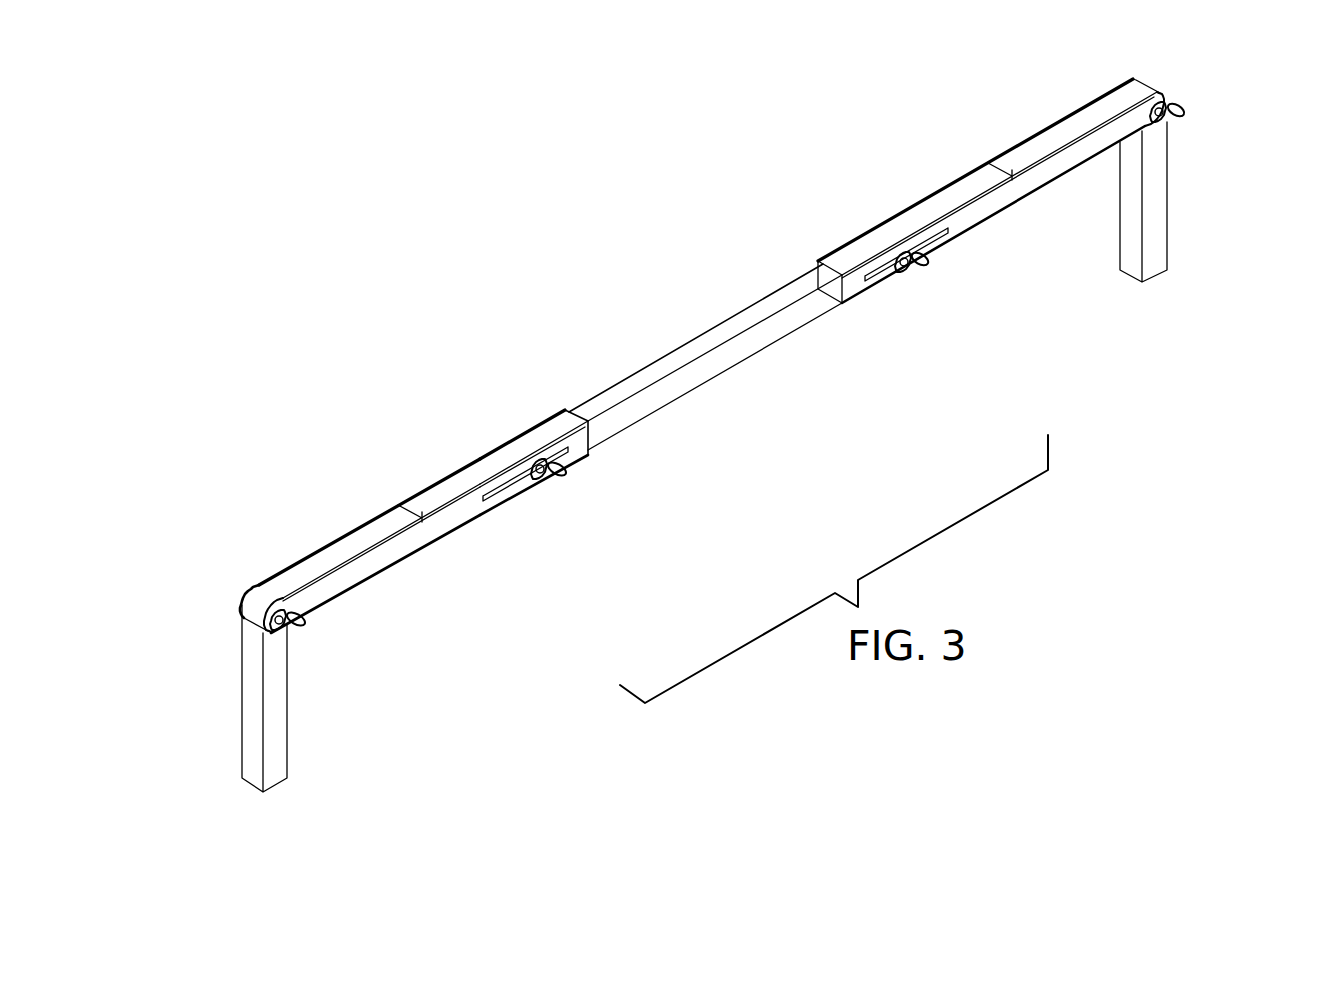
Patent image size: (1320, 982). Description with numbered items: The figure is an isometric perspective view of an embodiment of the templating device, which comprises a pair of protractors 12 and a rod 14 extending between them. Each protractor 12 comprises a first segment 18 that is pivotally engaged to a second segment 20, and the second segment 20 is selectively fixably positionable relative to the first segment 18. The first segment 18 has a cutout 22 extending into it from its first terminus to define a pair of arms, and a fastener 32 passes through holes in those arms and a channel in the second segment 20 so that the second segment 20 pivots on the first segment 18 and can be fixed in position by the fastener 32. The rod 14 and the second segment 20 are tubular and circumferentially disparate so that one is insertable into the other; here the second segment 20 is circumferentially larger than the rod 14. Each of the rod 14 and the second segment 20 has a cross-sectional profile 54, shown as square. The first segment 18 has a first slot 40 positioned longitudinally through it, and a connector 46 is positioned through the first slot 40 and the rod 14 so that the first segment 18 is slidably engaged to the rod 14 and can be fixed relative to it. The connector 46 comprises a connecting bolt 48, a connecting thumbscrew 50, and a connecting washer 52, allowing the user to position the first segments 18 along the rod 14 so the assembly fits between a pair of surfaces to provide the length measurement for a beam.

The protractor 12 is at (702, 356).
The rod 14 is at (737, 330).
The first segment 18 is at (937, 206).
The second segment 20 is at (254, 693).
The cutout 22 is at (305, 571).
The fastener 32 is at (264, 632).
The first slot 40 is at (878, 232).
The connector 46 is at (908, 277).
The connecting bolt 48 is at (524, 456).
The connecting thumbscrew 50 is at (567, 470).
The connecting washer 52 is at (538, 428).
The cross-sectional profile 54 is at (585, 418).